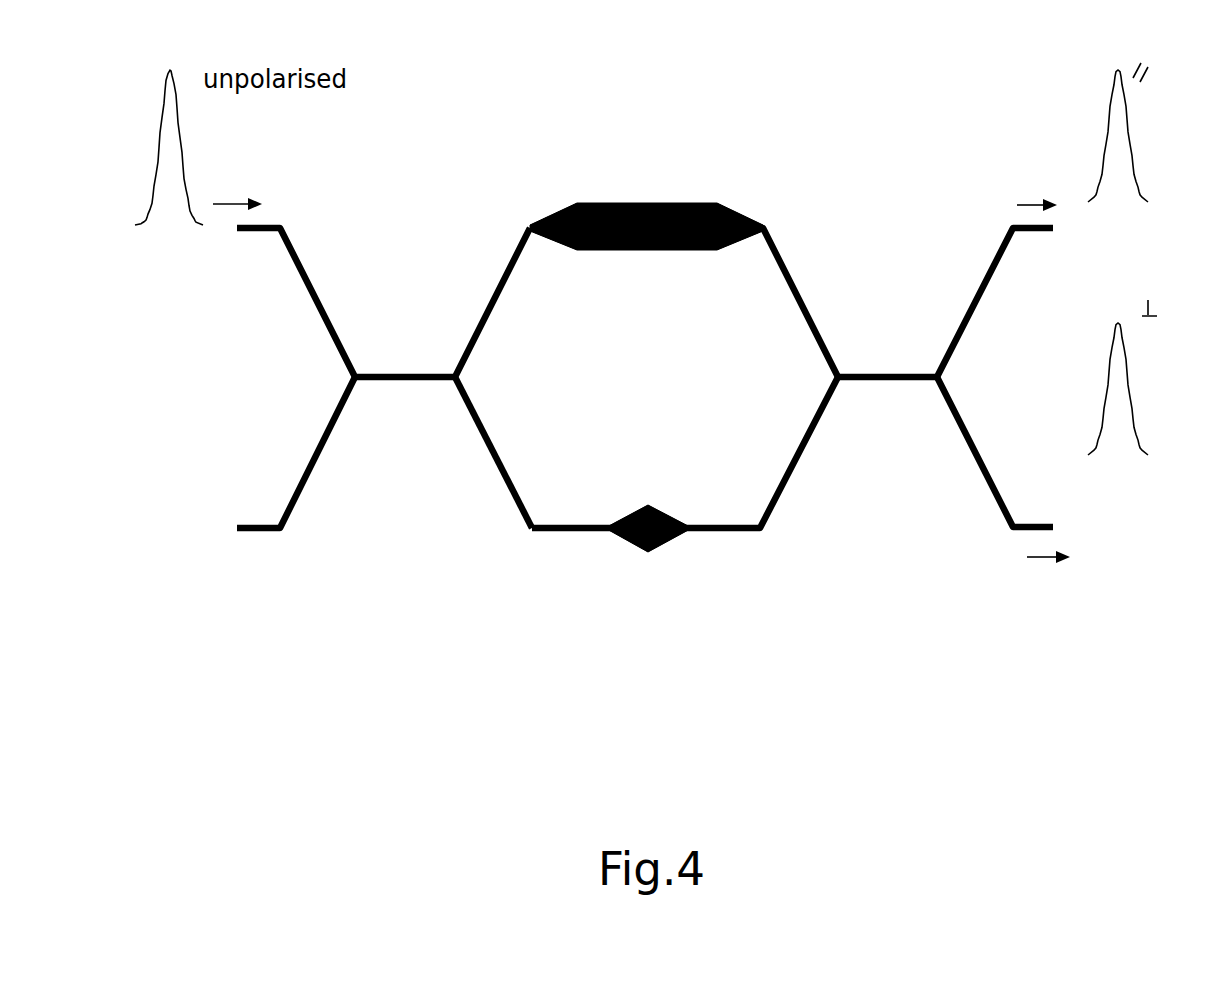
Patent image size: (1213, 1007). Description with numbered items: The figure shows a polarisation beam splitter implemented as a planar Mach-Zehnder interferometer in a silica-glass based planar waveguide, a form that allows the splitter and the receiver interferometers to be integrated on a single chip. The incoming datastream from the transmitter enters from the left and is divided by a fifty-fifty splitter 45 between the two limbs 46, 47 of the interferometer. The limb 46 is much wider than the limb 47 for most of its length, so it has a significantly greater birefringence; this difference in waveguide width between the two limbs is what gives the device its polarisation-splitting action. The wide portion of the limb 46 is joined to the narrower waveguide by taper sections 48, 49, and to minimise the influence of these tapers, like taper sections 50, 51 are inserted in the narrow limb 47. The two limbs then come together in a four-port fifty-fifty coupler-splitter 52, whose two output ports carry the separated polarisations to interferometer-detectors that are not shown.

The 50:50 splitter 45 is at (425, 375).
The limb 46 is at (661, 187).
The limb 47 is at (647, 488).
The taper section 48 is at (553, 213).
The taper section 49 is at (735, 212).
The taper section 50 is at (623, 538).
The taper section 51 is at (672, 538).
The 4-port 50:50 coupler-splitter 52 is at (897, 373).